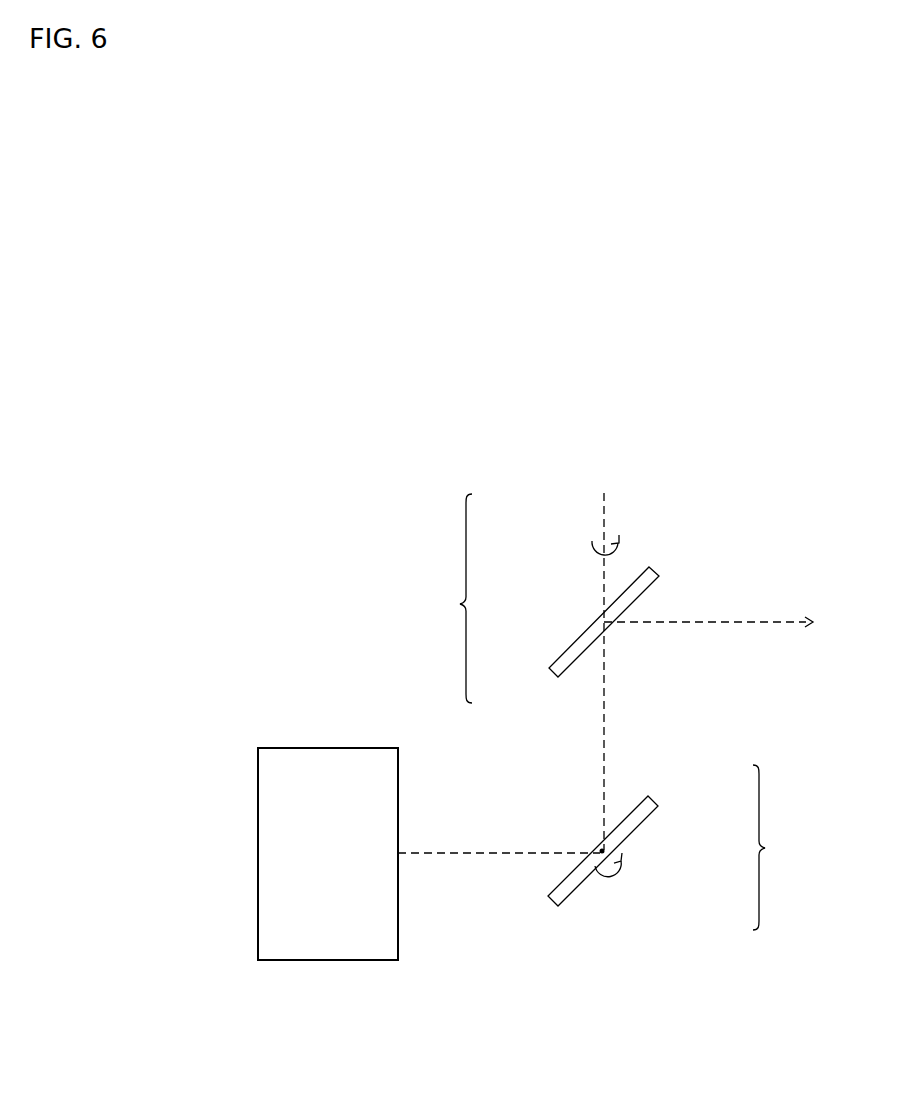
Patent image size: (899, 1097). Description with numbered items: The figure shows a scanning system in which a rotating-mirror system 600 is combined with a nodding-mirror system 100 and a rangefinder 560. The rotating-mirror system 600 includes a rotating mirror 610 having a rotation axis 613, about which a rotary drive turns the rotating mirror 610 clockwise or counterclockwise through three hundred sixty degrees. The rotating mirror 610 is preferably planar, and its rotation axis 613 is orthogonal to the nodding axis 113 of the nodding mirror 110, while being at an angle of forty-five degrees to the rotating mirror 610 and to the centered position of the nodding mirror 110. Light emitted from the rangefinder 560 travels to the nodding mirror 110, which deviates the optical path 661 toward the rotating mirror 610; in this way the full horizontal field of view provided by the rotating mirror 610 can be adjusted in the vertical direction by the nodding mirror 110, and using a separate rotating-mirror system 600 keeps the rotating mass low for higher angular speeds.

The nodding-mirror system 100 is at (784, 847).
The nodding mirror 110 is at (653, 803).
The nodding axis 113 is at (626, 882).
The rangefinder 560 is at (258, 855).
The rotating-mirror system 600 is at (439, 598).
The rotating mirror 610 is at (557, 672).
The rotation axis 613 is at (603, 523).
The optical path 661 is at (737, 620).